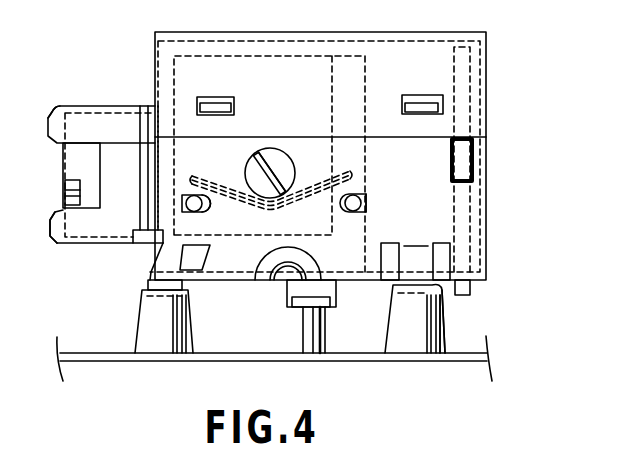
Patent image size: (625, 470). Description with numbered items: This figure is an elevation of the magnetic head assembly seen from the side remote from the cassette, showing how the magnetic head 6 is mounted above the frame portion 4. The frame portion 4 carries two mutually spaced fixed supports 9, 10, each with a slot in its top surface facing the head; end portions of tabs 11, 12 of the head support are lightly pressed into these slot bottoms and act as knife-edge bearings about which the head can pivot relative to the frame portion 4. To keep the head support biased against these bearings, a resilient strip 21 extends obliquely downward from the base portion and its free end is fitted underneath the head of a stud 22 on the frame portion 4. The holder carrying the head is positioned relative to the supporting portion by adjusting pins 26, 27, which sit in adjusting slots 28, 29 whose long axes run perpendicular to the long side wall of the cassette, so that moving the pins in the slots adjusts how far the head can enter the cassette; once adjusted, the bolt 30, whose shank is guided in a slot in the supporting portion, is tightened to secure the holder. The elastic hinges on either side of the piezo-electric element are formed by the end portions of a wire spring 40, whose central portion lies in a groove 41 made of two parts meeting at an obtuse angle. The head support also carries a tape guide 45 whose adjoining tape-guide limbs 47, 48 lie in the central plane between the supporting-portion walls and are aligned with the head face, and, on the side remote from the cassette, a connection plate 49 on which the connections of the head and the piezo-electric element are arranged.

The frame portion 4 is at (77, 358).
The magnetic head 6 is at (51, 162).
The fixed support 9 is at (176, 330).
The fixed support 10 is at (415, 335).
The tab 11 is at (148, 279).
The tab 12 is at (443, 286).
The resilient strip 21 is at (337, 292).
The stud 22 is at (322, 326).
The adjusting pin 26 is at (194, 206).
The adjusting pin 27 is at (350, 212).
The adjusting slot 28 is at (211, 203).
The adjusting slot 29 is at (367, 203).
The bolt 30 is at (270, 149).
The wire spring 40 is at (344, 172).
The groove 41 is at (299, 190).
The tape guide 45 is at (117, 95).
The tape-guide limb 47 is at (55, 117).
The tape-guide limb 48 is at (56, 232).
The connection plate 49 is at (471, 288).